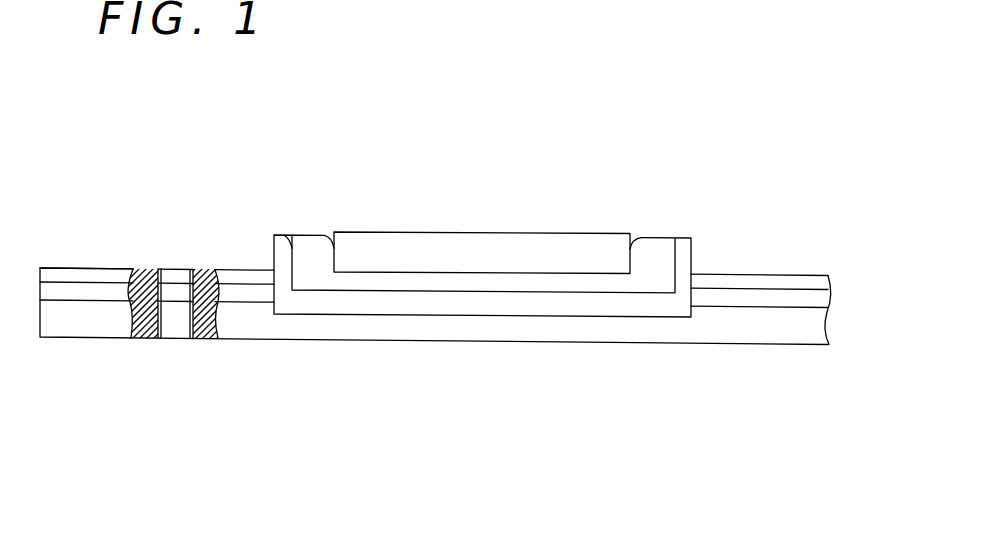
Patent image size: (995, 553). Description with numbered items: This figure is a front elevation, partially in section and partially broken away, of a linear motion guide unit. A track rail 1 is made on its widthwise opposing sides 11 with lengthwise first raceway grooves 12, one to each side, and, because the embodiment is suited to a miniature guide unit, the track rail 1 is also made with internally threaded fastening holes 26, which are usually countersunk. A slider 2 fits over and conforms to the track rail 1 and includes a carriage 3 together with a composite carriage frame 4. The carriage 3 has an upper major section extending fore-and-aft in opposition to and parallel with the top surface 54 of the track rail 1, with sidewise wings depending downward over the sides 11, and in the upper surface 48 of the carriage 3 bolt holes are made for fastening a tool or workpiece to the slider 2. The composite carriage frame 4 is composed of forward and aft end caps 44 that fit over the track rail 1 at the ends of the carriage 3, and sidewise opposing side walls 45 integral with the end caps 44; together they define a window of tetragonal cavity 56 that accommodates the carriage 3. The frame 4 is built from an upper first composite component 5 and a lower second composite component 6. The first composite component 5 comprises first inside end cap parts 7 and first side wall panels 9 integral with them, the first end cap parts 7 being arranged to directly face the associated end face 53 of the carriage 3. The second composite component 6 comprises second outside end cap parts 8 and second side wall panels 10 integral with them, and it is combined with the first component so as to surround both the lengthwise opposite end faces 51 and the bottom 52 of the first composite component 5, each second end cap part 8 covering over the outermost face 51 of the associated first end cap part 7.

The track rail 1 is at (85, 328).
The slider 2 is at (542, 226).
The carriage 3 is at (405, 248).
The composite carriage frame 4 is at (298, 233).
The first composite component 5 is at (400, 286).
The second composite component 6 is at (475, 307).
The first inside end cap part 7 is at (318, 260).
The second outside end cap part 8 is at (283, 260).
The first side wall panel 9 is at (556, 285).
The second side wall panel 10 is at (582, 305).
The side of track rail 11 is at (250, 325).
The first raceway groove 12 is at (240, 290).
The fastening hole 26 is at (166, 312).
The end cap 44 is at (312, 300).
The side wall 45 is at (512, 319).
The upper surface of carriage 48 is at (505, 231).
The end face of first composite component 51 is at (281, 235).
The bottom of first composite component 52 is at (347, 293).
The end face of carriage 53 is at (331, 242).
The top surface of track rail 54 is at (118, 269).
The tetragonal cavity 56 is at (455, 268).